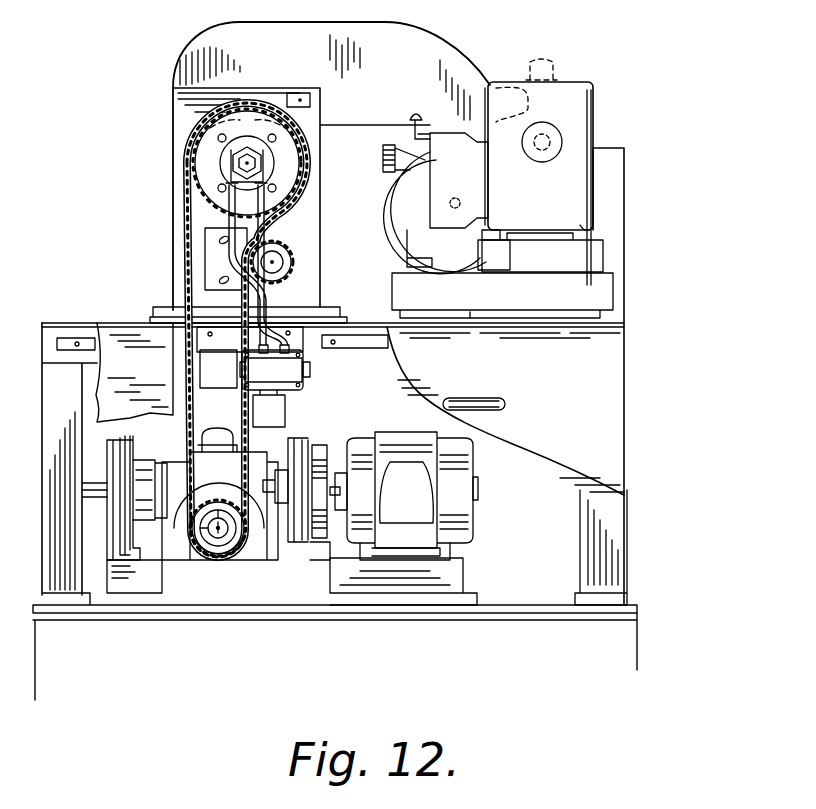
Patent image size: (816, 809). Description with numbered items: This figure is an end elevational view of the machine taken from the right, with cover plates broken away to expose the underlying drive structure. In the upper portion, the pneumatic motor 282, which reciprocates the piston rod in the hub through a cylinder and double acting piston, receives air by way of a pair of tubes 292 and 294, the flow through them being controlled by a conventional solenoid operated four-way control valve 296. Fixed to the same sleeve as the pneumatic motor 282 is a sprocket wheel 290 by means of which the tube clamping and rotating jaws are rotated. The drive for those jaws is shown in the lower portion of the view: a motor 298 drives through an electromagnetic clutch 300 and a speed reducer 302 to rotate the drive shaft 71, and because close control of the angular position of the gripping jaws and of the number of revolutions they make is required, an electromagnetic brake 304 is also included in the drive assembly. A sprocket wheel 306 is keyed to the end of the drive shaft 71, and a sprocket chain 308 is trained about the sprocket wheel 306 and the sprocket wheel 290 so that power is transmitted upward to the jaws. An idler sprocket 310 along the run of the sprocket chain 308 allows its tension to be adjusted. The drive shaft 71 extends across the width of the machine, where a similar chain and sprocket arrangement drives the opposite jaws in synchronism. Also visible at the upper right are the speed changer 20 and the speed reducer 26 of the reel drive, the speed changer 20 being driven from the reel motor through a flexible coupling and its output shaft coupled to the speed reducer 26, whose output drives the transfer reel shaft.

The speed reducer 26 is at (580, 90).
The speed changer 20 is at (404, 198).
The pneumatic motor 282 is at (223, 157).
The sprocket wheel 290 is at (290, 176).
The tube 292 is at (233, 248).
The tube 294 is at (262, 244).
The idler sprocket 310 is at (297, 266).
The sprocket chain 308 is at (194, 402).
The solenoid operated four-way control valve 296 is at (287, 372).
The electromagnetic brake 304 is at (133, 448).
The speed reducer 302 is at (235, 484).
The sprocket wheel 306 is at (227, 550).
The drive shaft 71 is at (216, 536).
The electromagnetic clutch 300 is at (300, 440).
The motor 298 is at (410, 440).